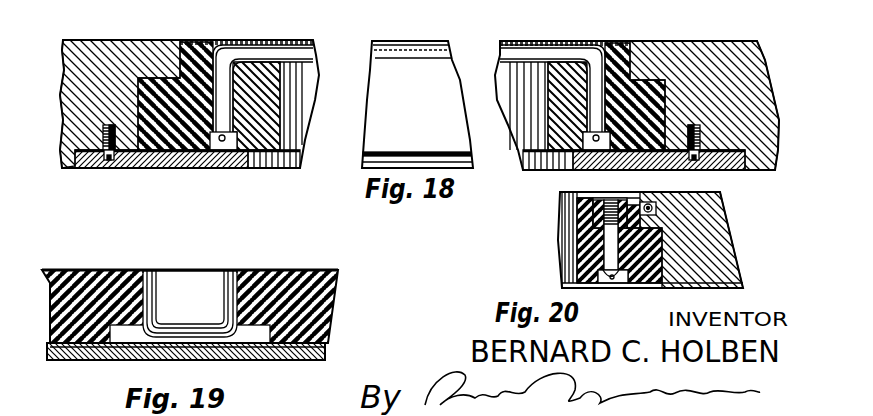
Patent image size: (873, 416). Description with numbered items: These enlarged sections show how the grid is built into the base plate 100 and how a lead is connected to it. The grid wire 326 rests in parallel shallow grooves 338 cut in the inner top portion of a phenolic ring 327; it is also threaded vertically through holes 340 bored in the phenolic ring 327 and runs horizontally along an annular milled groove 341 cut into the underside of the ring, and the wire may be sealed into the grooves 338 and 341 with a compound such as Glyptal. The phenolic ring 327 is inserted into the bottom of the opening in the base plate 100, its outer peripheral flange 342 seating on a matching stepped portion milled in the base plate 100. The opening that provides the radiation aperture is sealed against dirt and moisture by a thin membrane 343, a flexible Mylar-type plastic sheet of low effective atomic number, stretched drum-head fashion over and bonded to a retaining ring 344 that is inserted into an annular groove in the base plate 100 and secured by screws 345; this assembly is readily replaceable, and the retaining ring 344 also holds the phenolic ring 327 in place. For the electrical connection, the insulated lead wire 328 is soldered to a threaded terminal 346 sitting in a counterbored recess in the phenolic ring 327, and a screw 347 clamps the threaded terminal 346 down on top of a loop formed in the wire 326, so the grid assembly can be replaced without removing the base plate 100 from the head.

In FIG. 18, the base plate 100 is at (723, 42).
In FIG. 20, the base plate 100 is at (712, 238).
In FIG. 18, the wire 326 is at (408, 54).
In FIG. 19, the wire 326 is at (143, 276).
In FIG. 20, the wire 326 is at (577, 228).
In FIG. 18, the phenolic ring 327 is at (182, 43).
In FIG. 19, the phenolic ring 327 is at (337, 293).
In FIG. 20, the phenolic ring 327 is at (590, 272).
In FIG. 20, the insulated lead wire 328 is at (657, 209).
In FIG. 18, the shallow grooves 338 is at (560, 63).
In FIG. 19, the shallow grooves 338 is at (222, 271).
In FIG. 18, the holes 340 is at (222, 50).
In FIG. 19, the holes 340 is at (240, 322).
In FIG. 18, the annular milled groove 341 is at (216, 149).
In FIG. 19, the annular milled groove 341 is at (132, 335).
In FIG. 18, the outer peripheral flange 342 is at (135, 42).
In FIG. 18, the membrane 343 is at (392, 151).
In FIG. 19, the membrane 343 is at (328, 345).
In FIG. 18, the retaining ring 344 is at (246, 156).
In FIG. 19, the retaining ring 344 is at (80, 357).
In FIG. 18, the screws 345 is at (114, 166).
In FIG. 20, the threaded terminal 346 is at (592, 210).
In FIG. 20, the screw 347 is at (618, 284).